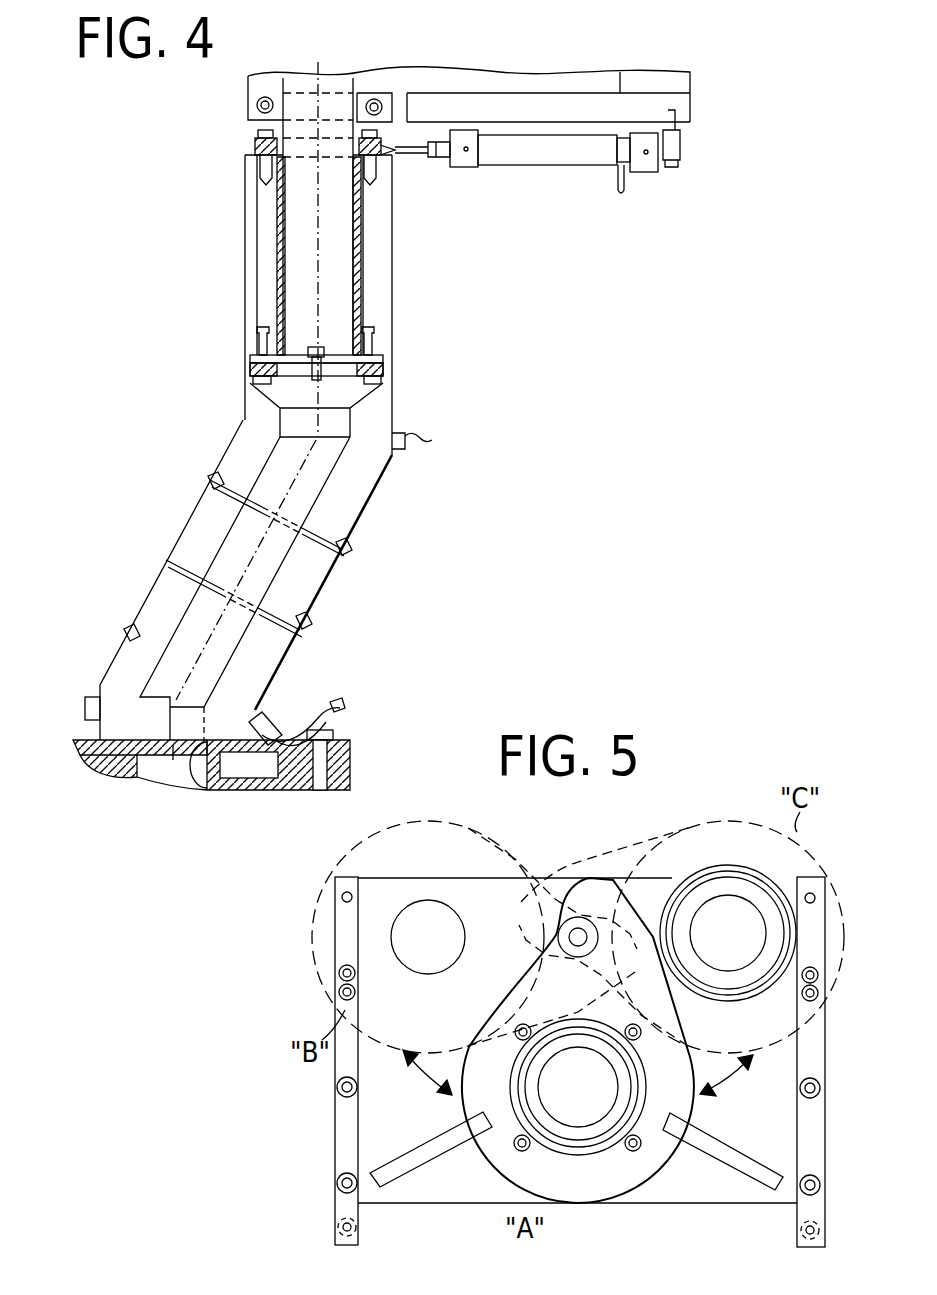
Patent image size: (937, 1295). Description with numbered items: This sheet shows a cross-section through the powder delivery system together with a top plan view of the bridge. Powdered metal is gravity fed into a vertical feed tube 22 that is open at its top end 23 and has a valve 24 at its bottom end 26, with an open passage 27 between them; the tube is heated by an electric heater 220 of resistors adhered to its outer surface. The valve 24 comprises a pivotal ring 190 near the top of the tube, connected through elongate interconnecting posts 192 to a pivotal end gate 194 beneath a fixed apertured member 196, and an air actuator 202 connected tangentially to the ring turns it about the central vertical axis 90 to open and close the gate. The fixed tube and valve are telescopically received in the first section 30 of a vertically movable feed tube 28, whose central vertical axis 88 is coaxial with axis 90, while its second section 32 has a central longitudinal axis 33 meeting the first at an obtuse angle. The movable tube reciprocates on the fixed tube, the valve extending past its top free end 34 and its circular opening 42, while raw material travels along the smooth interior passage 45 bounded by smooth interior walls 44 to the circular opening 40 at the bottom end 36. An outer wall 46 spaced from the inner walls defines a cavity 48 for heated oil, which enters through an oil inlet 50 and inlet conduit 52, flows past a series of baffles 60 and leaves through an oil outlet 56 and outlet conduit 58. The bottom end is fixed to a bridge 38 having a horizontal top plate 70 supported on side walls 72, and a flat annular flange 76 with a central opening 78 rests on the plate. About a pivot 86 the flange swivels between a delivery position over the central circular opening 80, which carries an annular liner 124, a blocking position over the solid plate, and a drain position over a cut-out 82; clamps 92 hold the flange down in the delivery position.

In FIG. 4, the vertical feed tube 22 is at (330, 298).
In FIG. 4, the top end 23 is at (275, 74).
In FIG. 4, the valve 24 is at (375, 386).
In FIG. 4, the bottom end 26 is at (265, 359).
In FIG. 4, the open passage 27 is at (303, 200).
In FIG. 4, the vertically movable feed tube 28 is at (215, 468).
In FIG. 4, the first section 30 is at (245, 242).
In FIG. 4, the second section 32 is at (185, 527).
In FIG. 4, the central longitudinal axis 33 is at (225, 496).
In FIG. 4, the top free end 34 is at (255, 145).
In FIG. 4, the bottom end 36 is at (290, 790).
In FIG. 4, the side rail 38 is at (250, 790).
In FIG. 5, the side rail 38 is at (768, 1186).
In FIG. 4, the circular opening 40 is at (184, 754).
In FIG. 4, the circular opening 42 is at (398, 152).
In FIG. 4, the interior walls 44 is at (182, 576).
In FIG. 4, the interior passage 45 is at (322, 474).
In FIG. 4, the outer wall 46 is at (348, 542).
In FIG. 4, the cavity 48 is at (320, 577).
In FIG. 4, the oil inlet 50 is at (274, 714).
In FIG. 4, the inlet conduit 52 is at (334, 700).
In FIG. 4, the oil outlet 56 is at (400, 455).
In FIG. 4, the outlet conduit 58 is at (432, 440).
In FIG. 4, the baffles 60 is at (215, 476).
In FIG. 4, the top plate 70 is at (350, 766).
In FIG. 5, the top plate 70 is at (460, 1192).
In FIG. 5, the side walls 72 is at (340, 1243).
In FIG. 4, the annular flange 76 is at (103, 758).
In FIG. 5, the annular flange 76 is at (320, 960).
In FIG. 4, the central opening 78 is at (178, 758).
In FIG. 5, the central opening 78 is at (430, 898).
In FIG. 5, the central circular opening 80 is at (592, 1099).
In FIG. 5, the cut-out 82 is at (688, 880).
In FIG. 4, the pivot 86 is at (336, 733).
In FIG. 5, the pivot 86 is at (578, 928).
In FIG. 4, the central vertical axis 88 is at (350, 250).
In FIG. 4, the central vertical axis 90 is at (350, 250).
In FIG. 5, the clamps 92 is at (396, 1170).
In FIG. 4, the annular liner 124 is at (140, 776).
In FIG. 4, the pivotal ring 190 is at (258, 135).
In FIG. 4, the interconnecting posts 192 is at (365, 306).
In FIG. 4, the pivotal end gate 194 is at (380, 376).
In FIG. 4, the fixed apertured member 196 is at (298, 345).
In FIG. 4, the air actuator 202 is at (522, 160).
In FIG. 4, the electric heater 220 is at (280, 287).